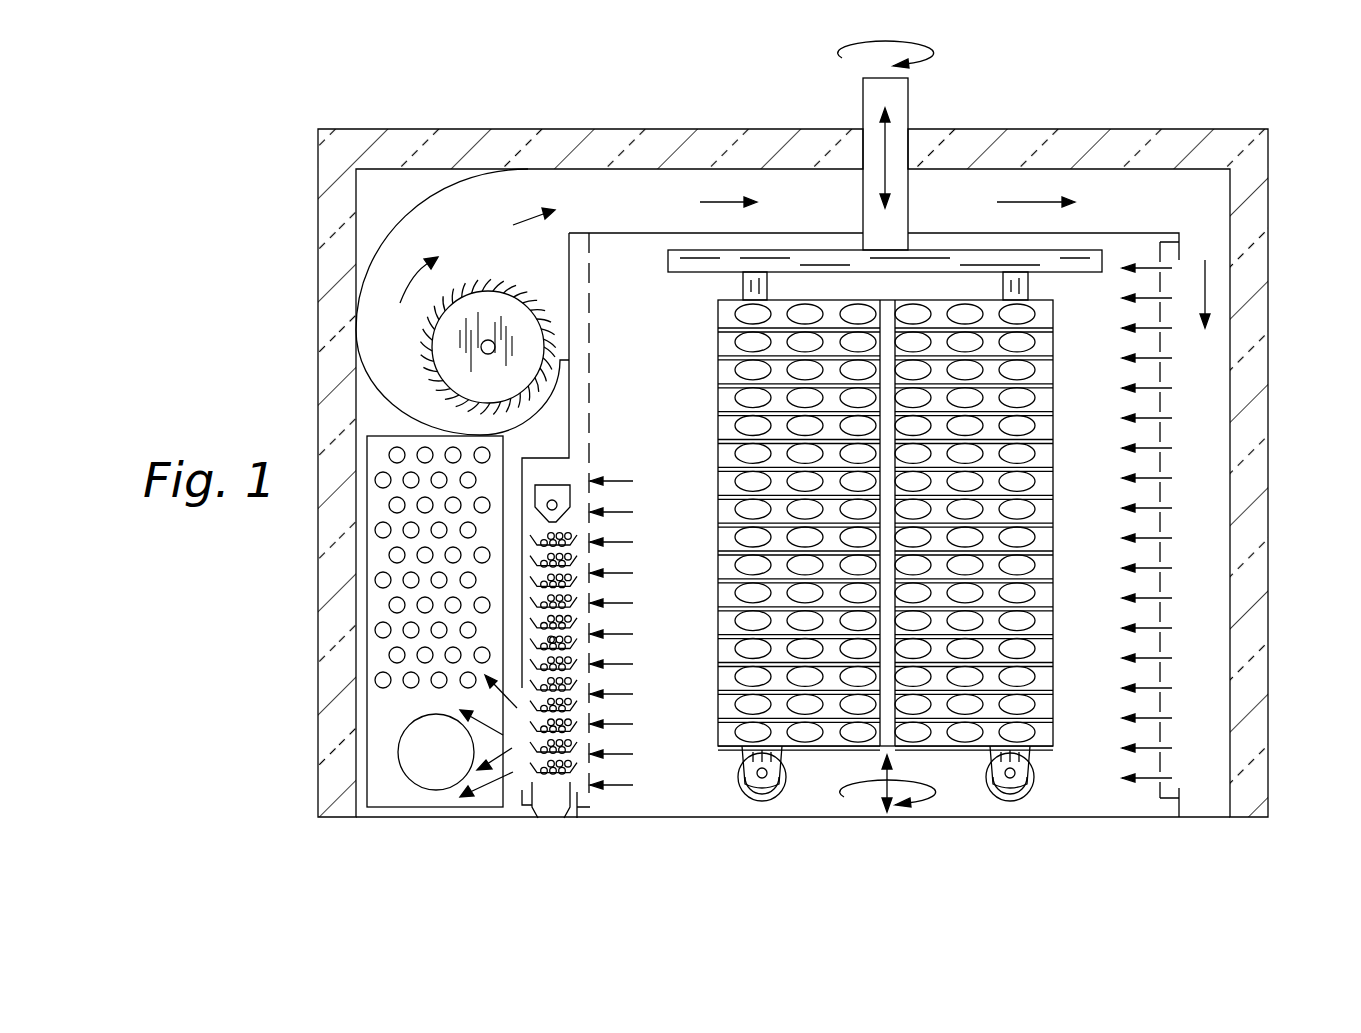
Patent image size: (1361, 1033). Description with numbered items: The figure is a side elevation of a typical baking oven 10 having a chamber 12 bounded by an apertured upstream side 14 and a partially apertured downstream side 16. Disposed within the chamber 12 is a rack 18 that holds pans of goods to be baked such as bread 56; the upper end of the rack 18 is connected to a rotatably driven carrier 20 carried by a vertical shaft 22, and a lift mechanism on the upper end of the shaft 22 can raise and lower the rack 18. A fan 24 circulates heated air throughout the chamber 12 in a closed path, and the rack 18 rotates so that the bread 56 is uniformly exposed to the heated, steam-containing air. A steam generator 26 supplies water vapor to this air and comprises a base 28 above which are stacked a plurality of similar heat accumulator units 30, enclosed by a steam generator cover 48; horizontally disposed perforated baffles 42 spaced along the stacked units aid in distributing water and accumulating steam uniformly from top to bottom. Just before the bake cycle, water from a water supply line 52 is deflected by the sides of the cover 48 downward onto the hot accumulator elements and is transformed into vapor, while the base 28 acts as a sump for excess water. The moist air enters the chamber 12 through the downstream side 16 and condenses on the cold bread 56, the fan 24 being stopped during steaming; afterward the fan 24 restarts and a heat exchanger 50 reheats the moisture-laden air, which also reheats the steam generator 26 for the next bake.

The oven 10 is at (1190, 98).
The chamber 12 is at (1078, 786).
The apertured upstream side 14 is at (1183, 558).
The partially apertured downstream side 16 is at (605, 799).
The rack 18 is at (911, 556).
The rotatably driven carrier 20 is at (1077, 260).
The vertical shaft 22 is at (863, 107).
The fan 24 is at (397, 343).
The steam generator 26 is at (611, 661).
The base 28 is at (550, 800).
The heat accumulator units 30 is at (585, 656).
The baffles 42 is at (575, 773).
The steam generator cover 48 is at (610, 471).
The heat exchanger 50 is at (373, 610).
The water supply line 52 is at (557, 503).
The bread 56 is at (1030, 420).